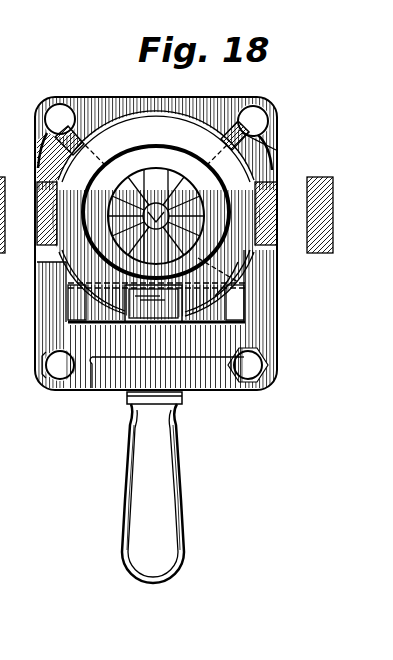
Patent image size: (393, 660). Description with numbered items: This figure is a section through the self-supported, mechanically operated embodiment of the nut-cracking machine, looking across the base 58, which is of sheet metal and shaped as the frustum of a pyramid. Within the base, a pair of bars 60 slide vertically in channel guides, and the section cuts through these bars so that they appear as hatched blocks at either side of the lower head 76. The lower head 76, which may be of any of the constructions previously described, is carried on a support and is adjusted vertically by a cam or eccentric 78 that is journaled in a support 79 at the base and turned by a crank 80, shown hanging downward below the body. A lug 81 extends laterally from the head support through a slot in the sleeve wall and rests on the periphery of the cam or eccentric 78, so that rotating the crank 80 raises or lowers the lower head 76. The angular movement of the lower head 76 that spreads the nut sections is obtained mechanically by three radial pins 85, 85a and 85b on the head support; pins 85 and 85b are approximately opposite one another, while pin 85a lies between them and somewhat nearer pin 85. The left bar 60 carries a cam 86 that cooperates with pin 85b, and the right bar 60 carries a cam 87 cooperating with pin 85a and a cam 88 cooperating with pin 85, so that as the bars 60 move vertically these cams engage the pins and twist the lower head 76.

The base 58 is at (138, 261).
The bars 60 is at (36, 200).
The lower head 76 is at (98, 230).
The cam or eccentric 78 is at (222, 335).
The support 79 is at (170, 345).
The crank 80 is at (162, 500).
The lug 81 is at (152, 307).
The radial pin 85 is at (256, 293).
The radial pin 85a is at (276, 152).
The radial pin 85b is at (88, 128).
The cam 86 is at (62, 150).
The cam 87 is at (248, 128).
The cam 88 is at (253, 278).